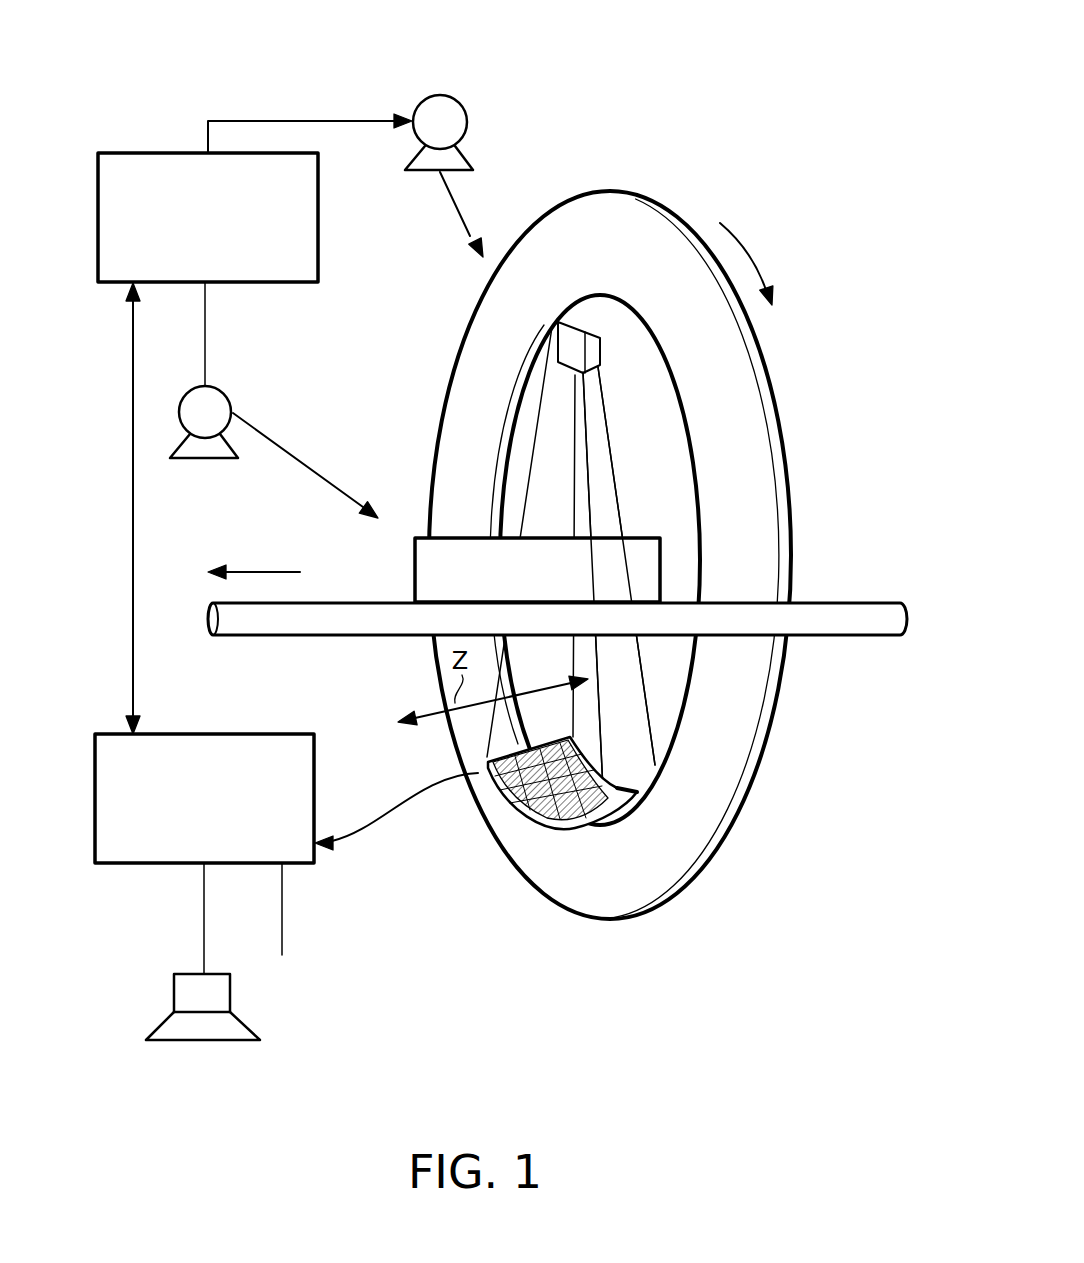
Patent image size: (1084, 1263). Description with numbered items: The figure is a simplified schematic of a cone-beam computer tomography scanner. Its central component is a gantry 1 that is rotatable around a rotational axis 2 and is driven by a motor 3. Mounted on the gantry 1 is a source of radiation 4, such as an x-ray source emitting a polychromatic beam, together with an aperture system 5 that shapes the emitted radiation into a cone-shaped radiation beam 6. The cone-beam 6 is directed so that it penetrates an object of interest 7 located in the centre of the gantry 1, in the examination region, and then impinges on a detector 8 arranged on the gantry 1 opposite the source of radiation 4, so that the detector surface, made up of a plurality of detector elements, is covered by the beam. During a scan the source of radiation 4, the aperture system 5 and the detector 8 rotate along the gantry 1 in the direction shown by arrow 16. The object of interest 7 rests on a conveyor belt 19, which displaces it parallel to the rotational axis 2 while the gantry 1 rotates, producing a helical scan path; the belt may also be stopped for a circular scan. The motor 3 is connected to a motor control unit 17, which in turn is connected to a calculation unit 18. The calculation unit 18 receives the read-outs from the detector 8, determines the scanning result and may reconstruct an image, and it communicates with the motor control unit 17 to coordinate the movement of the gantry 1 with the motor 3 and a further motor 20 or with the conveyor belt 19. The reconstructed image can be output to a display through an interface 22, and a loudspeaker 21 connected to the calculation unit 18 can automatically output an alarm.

The gantry 1 is at (758, 747).
The rotational axis 2 is at (254, 568).
The motor 3 is at (440, 95).
The source of radiation 4 is at (588, 258).
The aperture system 5 is at (570, 348).
The cone-shaped radiation beam 6 is at (617, 483).
The object of interest 7 is at (415, 572).
The detector 8 is at (556, 830).
The arrow 16 is at (743, 247).
The motor control unit 17 is at (126, 152).
The calculation unit 18 is at (265, 733).
The conveyor belt 19 is at (852, 603).
The motor 20 is at (232, 400).
The loudspeaker 21 is at (205, 1043).
The interface 22 is at (282, 912).